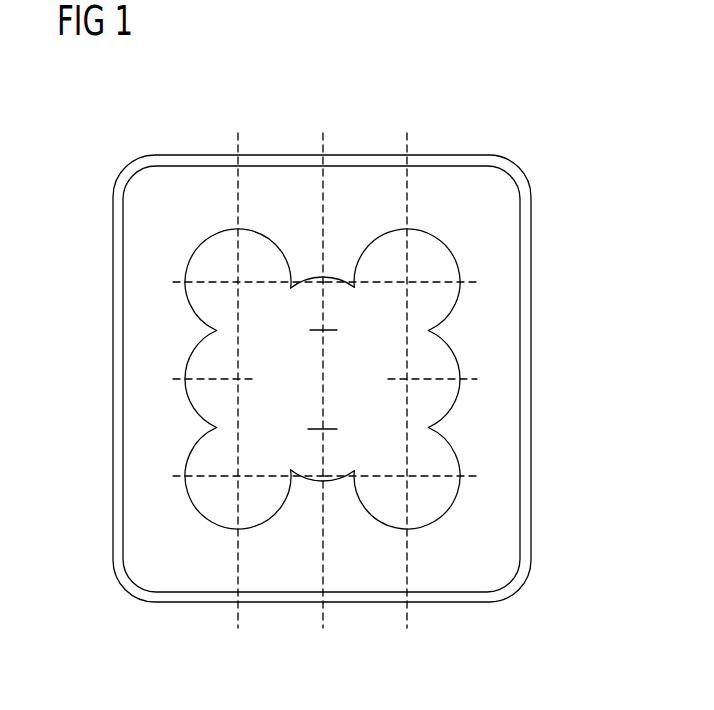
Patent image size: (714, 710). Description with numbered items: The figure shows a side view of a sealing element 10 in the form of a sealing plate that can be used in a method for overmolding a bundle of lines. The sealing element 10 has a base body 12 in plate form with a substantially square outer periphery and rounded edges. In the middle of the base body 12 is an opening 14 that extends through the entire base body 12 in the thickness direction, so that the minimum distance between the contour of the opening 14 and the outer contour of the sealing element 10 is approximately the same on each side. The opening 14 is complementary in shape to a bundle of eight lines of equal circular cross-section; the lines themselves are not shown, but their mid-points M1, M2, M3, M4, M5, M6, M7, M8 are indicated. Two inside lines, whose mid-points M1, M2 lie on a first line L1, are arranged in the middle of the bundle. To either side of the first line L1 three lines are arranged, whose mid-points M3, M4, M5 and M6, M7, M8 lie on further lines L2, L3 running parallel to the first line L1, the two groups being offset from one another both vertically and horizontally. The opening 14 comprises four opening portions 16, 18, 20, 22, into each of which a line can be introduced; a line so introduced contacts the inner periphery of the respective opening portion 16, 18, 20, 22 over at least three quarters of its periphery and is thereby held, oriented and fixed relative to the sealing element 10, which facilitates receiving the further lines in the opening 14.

The sealing element 10 is at (115, 148).
The base body 12 is at (448, 175).
The opening 14 is at (270, 410).
The opening portion 16 is at (198, 244).
The opening portion 18 is at (213, 500).
The opening portion 20 is at (447, 249).
The opening portion 22 is at (435, 507).
The first line L1 is at (238, 133).
The further line L2 is at (323, 133).
The further line L3 is at (407, 133).
The mid-point M1 is at (323, 330).
The mid-point M2 is at (323, 429).
The mid-point M3 is at (238, 282).
The mid-point M4 is at (238, 379).
The mid-point M5 is at (238, 476).
The mid-point M6 is at (407, 282).
The mid-point M7 is at (407, 379).
The mid-point M8 is at (407, 477).